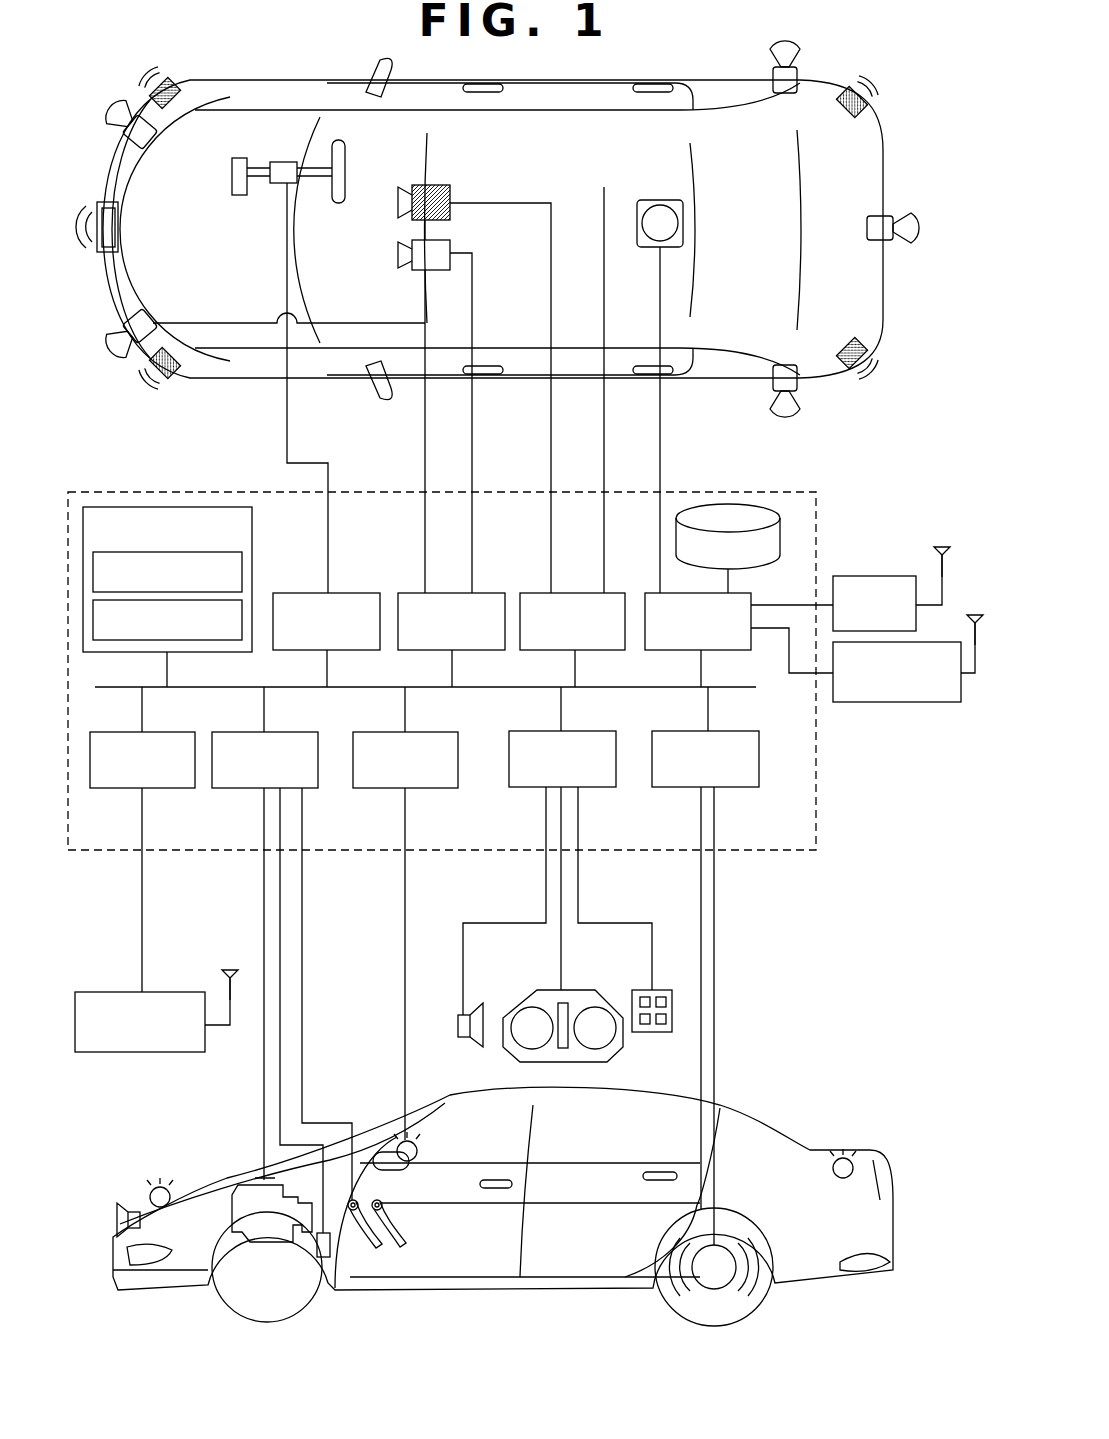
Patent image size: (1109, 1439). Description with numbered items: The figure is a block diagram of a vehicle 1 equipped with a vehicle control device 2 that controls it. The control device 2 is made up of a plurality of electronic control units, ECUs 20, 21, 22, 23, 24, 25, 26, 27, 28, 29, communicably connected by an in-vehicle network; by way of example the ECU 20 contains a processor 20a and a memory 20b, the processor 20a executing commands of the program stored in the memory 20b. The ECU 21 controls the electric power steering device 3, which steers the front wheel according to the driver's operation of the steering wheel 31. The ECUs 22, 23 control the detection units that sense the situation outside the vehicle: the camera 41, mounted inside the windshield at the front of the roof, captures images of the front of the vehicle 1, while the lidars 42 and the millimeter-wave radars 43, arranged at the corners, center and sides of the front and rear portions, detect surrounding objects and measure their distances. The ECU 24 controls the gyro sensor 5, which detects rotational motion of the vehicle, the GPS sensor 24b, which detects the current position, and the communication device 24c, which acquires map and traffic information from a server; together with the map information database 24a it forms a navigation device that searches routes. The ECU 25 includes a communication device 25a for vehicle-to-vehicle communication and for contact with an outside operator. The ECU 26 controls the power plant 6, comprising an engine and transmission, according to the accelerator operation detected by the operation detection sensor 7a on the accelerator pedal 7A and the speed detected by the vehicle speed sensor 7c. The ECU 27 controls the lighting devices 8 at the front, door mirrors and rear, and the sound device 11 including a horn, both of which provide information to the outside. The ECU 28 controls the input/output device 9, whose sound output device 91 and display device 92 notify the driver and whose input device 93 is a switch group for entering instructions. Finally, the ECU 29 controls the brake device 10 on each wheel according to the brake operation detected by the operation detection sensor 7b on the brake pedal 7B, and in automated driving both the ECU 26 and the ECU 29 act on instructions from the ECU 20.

The vehicle 1 is at (890, 138).
The vehicle control device 2 is at (806, 852).
The electric power steering device 3 is at (240, 196).
The gyro sensor 5 is at (685, 221).
The power plant 6 is at (234, 1188).
The operation detection sensor 7a is at (354, 1200).
The operation detection sensor 7b is at (383, 1204).
The vehicle speed sensor 7c is at (326, 1258).
The accelerator pedal 7A is at (388, 1250).
The brake pedal 7B is at (408, 1238).
The lighting devices 8 is at (150, 1194).
The input/output device 9 is at (555, 1036).
The brake device 10 is at (718, 1290).
The sound device 11 is at (120, 1216).
The ECU 20 is at (201, 569).
The processor 20a is at (243, 572).
The memory 20b is at (243, 620).
The ECU 21 is at (360, 592).
The ECU 22 is at (454, 592).
The ECU 23 is at (578, 592).
The ECU 24 is at (802, 601).
The map information database 24a is at (726, 503).
The GPS sensor 24b is at (888, 575).
The communication device 24c is at (880, 703).
The ECU 25 is at (156, 896).
The communication device 25a is at (142, 1054).
The ECU 26 is at (240, 790).
The ECU 27 is at (435, 790).
The ECU 28 is at (600, 790).
The ECU 29 is at (740, 790).
The steering wheel 31 is at (338, 205).
The camera 41 is at (452, 210).
The lidar 42 is at (150, 150).
The millimeter-wave radar 43 is at (176, 108).
The sound output device 91 is at (458, 1020).
The display device 92 is at (520, 1000).
The input device 93 is at (650, 1032).